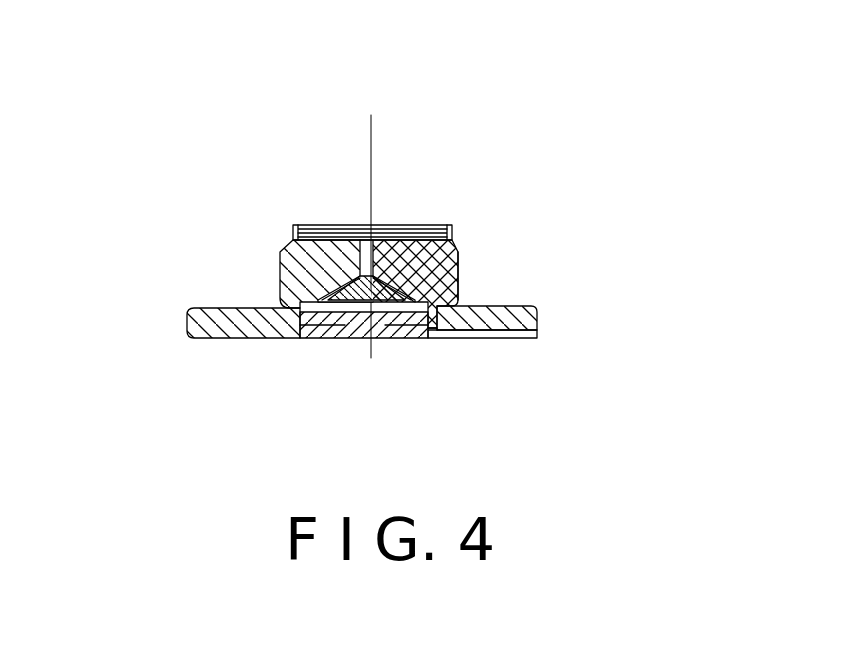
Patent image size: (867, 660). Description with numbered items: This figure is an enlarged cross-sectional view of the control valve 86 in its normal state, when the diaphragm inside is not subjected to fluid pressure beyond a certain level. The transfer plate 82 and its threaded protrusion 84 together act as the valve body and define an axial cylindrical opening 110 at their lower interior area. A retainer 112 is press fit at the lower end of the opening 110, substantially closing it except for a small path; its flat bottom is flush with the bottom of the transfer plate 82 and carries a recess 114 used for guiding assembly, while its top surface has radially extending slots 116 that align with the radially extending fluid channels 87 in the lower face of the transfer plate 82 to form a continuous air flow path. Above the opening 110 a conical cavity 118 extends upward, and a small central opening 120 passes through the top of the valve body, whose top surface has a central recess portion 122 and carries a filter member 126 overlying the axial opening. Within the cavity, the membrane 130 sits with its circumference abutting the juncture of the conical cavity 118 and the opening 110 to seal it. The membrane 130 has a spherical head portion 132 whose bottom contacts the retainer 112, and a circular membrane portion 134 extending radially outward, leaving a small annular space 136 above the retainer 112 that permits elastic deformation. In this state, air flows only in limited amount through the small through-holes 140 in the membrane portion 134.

The transfer plate 82 is at (542, 308).
The threaded protrusion 84 is at (280, 263).
The control valve 86 is at (418, 160).
The fluid channels 87 is at (527, 333).
The cylindrical opening 110 is at (430, 340).
The retainer 112 is at (432, 343).
The recess 114 is at (380, 347).
The slots 116 is at (460, 279).
The conical cavity 118 is at (405, 238).
The central opening 120 is at (381, 248).
The central recess portion 122 is at (325, 237).
The filter member 126 is at (352, 222).
The membrane 130 is at (443, 272).
The head portion 132 is at (330, 340).
The membrane portion 134 is at (300, 325).
The annular space 136 is at (303, 338).
The through-holes 140 is at (432, 240).